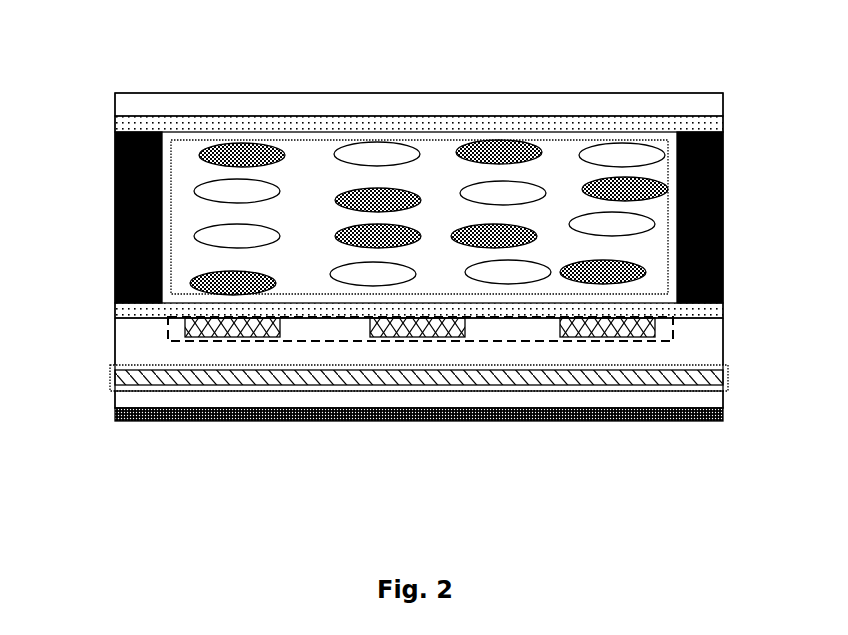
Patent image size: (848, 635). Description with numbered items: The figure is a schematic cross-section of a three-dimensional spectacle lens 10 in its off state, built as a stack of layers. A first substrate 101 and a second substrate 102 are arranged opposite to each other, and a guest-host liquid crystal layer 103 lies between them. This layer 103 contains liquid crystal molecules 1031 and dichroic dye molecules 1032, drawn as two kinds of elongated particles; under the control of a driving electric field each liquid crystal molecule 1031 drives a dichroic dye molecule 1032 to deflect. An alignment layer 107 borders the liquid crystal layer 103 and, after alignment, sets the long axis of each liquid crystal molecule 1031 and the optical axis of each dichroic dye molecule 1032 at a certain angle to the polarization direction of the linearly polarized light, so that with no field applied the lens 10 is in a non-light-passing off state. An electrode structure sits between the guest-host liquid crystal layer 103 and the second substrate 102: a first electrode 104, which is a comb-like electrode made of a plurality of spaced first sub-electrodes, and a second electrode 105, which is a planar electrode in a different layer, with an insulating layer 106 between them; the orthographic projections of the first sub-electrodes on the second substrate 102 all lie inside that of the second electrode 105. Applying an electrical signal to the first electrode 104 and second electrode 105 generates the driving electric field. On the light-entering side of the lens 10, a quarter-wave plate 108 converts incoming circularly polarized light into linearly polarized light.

The 3D spectacle lens 10 is at (569, 89).
The first substrate 101 is at (723, 109).
The second substrate 102 is at (723, 399).
The guest-host liquid crystal layer 103 is at (188, 140).
The liquid crystal molecules 1031 is at (376, 153).
The dichroic dye molecules 1032 is at (499, 152).
The first electrode 104 is at (176, 341).
The second electrode 105 is at (110, 385).
The insulating layer 106 is at (723, 332).
The alignment layer 107 is at (115, 123).
The λ/4 wave plate 108 is at (607, 422).